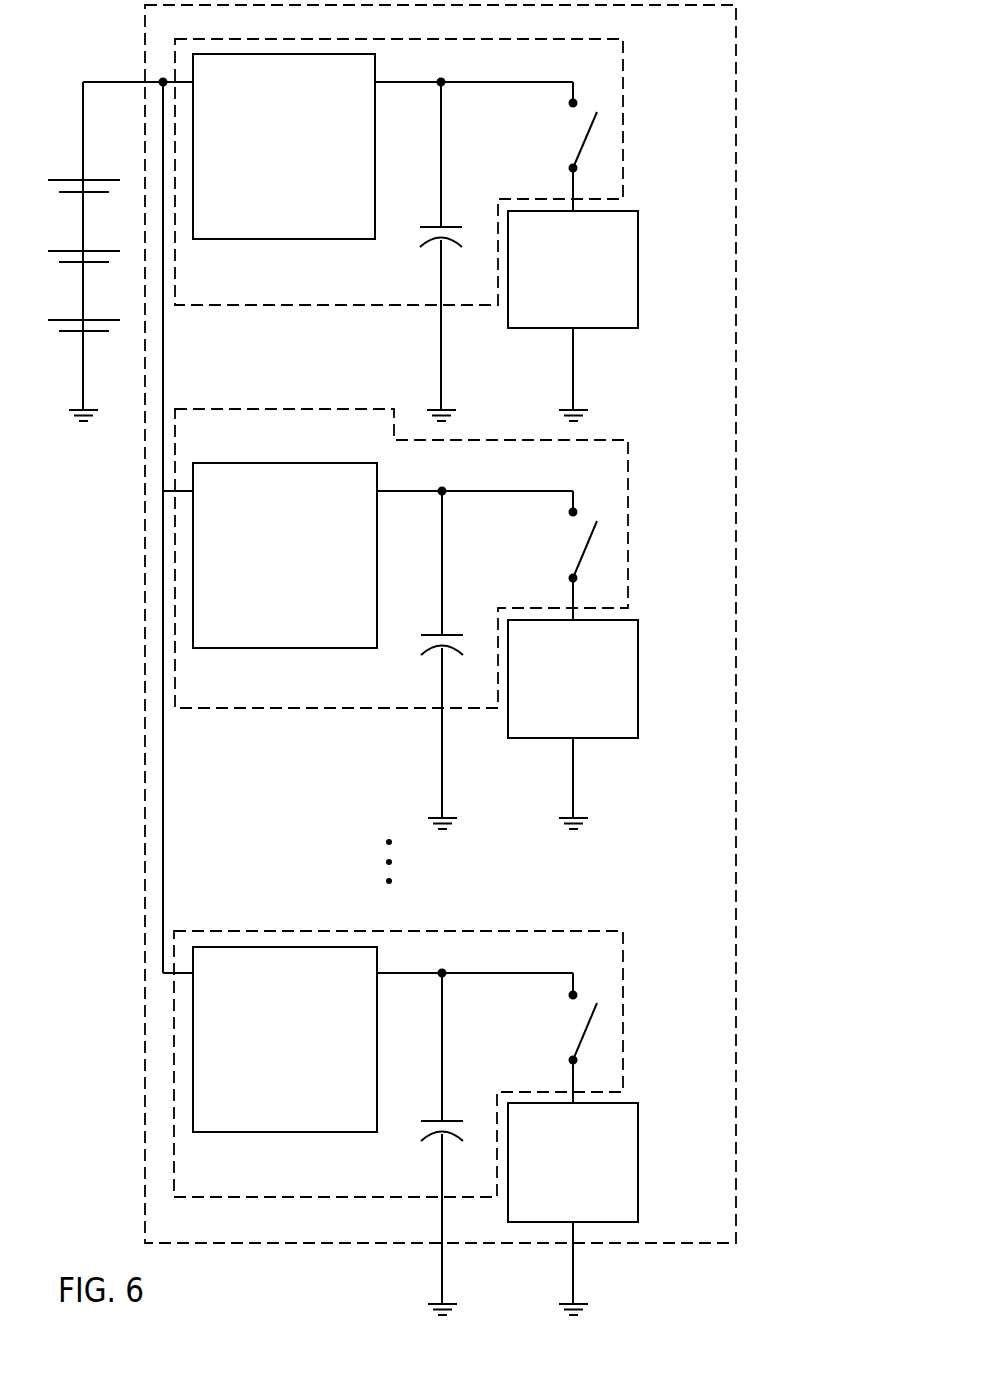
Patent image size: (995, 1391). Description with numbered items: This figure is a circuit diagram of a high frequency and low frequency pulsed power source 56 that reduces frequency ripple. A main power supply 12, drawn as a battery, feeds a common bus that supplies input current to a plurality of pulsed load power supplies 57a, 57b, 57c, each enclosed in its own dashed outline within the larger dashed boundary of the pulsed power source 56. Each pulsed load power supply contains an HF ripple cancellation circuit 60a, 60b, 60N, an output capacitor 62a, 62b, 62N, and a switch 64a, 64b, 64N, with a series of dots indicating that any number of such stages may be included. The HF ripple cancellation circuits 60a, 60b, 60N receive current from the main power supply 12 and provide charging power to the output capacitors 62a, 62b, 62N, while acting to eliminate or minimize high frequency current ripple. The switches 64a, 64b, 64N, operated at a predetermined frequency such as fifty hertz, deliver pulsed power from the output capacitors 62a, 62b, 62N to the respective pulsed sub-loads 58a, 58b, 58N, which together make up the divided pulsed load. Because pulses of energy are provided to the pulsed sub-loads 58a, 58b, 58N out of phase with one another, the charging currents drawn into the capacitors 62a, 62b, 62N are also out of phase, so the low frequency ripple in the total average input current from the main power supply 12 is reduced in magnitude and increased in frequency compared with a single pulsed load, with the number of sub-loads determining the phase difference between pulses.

The main power supply 12 is at (98, 249).
The pulsed power source 56 is at (144, 72).
The pulsed load power supply 57a is at (240, 38).
The pulsed load power supply 57b is at (243, 408).
The pulsed load power supply 57c is at (250, 930).
The HF ripple cancellation circuit 60a is at (277, 240).
The HF ripple cancellation circuit 60b is at (285, 463).
The HF ripple cancellation circuit 60N is at (285, 947).
The output capacitor 62a is at (453, 227).
The output capacitor 62b is at (454, 635).
The output capacitor 62N is at (454, 1121).
The switch 64a is at (575, 101).
The switch 64b is at (575, 510).
The switch 64N is at (575, 993).
The pulsed sub-load 58a is at (638, 270).
The pulsed sub-load 58b is at (638, 680).
The pulsed sub-load 58N is at (638, 1164).